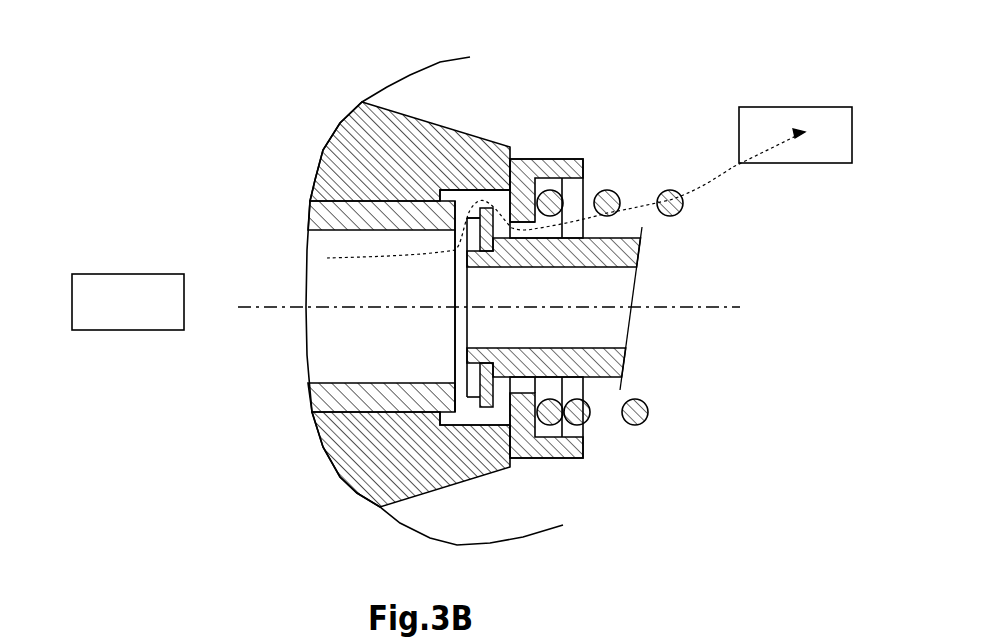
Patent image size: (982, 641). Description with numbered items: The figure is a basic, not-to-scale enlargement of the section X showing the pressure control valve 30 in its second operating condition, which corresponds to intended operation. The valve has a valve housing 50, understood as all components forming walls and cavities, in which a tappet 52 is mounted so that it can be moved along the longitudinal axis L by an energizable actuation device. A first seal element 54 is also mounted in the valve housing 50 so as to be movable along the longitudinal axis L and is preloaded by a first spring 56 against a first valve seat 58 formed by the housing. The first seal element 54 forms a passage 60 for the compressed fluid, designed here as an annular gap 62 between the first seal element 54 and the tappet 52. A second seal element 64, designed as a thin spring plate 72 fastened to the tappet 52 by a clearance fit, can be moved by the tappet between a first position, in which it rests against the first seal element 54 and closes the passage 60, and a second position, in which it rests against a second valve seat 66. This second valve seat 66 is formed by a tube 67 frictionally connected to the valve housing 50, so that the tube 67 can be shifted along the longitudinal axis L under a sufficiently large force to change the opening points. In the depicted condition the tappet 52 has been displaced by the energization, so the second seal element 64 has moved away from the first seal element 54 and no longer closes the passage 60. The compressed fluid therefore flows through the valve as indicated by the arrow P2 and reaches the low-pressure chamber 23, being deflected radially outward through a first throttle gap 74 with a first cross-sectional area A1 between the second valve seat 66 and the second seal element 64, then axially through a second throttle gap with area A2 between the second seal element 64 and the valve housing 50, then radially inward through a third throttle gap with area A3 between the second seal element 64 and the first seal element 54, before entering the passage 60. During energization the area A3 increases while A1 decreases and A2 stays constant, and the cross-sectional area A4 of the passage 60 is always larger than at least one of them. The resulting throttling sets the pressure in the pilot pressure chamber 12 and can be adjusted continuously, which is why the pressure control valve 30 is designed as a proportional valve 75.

The pilot pressure chamber 12 is at (120, 273).
The low-pressure chamber 23 is at (800, 107).
The pressure control valve 30 is at (511, 274).
The proportional valve 75 is at (277, 100).
The valve housing 50 is at (357, 143).
The tappet 52 is at (600, 377).
The first seal element 54 is at (583, 167).
The first spring 56 is at (669, 190).
The first valve seat 58 is at (550, 458).
The passage 60 is at (651, 332).
The annular gap 62 is at (638, 260).
The second seal element 64 is at (471, 357).
The spring plate 72 is at (455, 393).
The second valve seat 66 is at (458, 390).
The tube 67 is at (333, 393).
The throttle gap 74 is at (493, 133).
The first cross-sectional area A1 is at (440, 188).
The second cross-sectional area A2 is at (473, 190).
The third cross-sectional area A3 is at (513, 221).
The cross-sectional area of the passage A4 is at (523, 387).
The arrow P2 is at (733, 170).
The longitudinal axis L is at (723, 308).
The section X is at (230, 472).